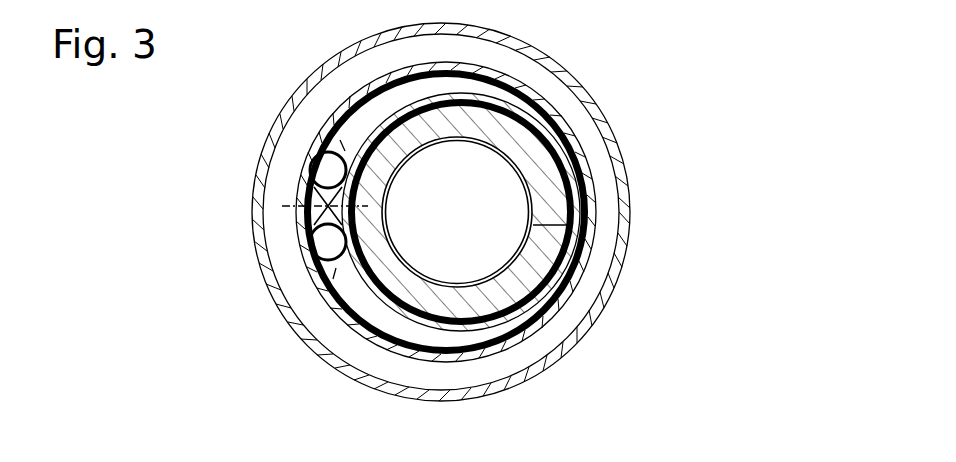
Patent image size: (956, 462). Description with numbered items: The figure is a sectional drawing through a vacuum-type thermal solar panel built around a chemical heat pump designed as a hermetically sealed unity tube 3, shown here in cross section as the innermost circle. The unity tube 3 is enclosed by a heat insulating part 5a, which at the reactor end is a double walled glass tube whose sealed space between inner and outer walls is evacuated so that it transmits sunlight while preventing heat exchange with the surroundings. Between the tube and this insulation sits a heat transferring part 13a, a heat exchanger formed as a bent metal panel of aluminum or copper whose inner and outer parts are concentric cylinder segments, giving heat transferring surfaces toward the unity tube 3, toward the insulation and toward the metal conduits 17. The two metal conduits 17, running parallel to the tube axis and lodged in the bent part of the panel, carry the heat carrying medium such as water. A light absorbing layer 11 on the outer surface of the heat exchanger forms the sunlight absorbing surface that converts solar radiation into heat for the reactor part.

The chemical heat pump unity tube 3 is at (537, 263).
The heat insulating part 5a is at (623, 226).
The light absorbing layer 11 is at (357, 337).
The heat transferring part 13a is at (372, 128).
The metal conduits 17 is at (324, 239).